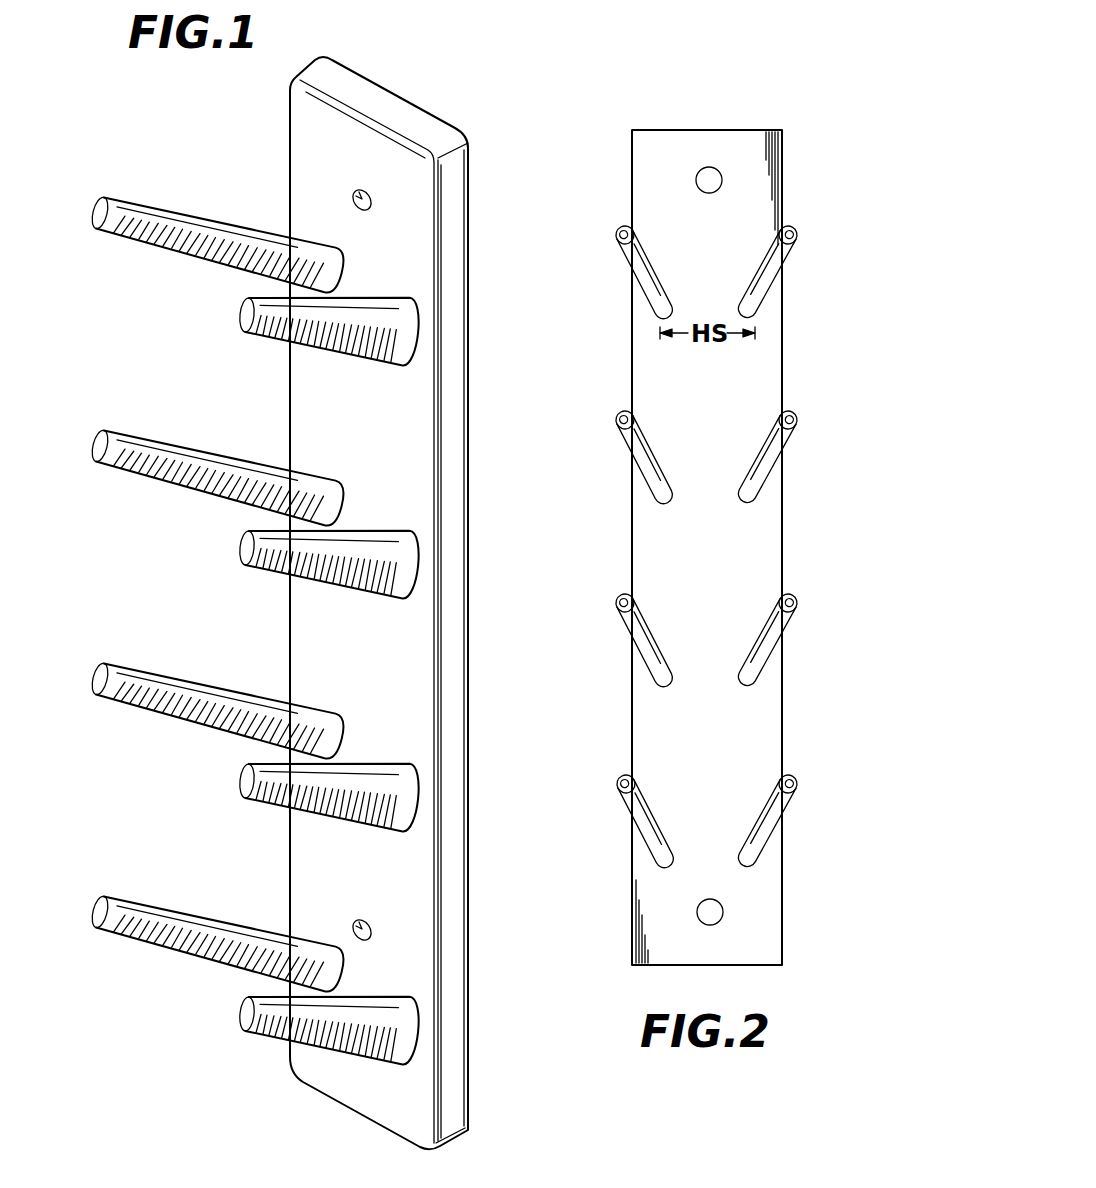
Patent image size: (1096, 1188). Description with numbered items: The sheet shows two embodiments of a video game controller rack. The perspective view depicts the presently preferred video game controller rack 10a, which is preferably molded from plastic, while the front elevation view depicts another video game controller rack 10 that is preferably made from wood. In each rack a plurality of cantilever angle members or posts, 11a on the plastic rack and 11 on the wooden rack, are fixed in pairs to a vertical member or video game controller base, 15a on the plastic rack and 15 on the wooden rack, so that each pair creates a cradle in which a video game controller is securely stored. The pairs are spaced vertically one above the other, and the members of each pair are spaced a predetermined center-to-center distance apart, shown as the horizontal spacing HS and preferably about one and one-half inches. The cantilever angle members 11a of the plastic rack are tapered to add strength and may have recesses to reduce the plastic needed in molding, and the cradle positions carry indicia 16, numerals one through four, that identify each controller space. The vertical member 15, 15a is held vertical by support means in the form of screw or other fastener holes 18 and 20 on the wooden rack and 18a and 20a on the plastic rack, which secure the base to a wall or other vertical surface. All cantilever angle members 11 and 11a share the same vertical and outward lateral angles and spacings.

In FIG. 2, the video game controller rack 10 is at (731, 494).
In FIG. 1, the video game controller rack 10a is at (396, 80).
In FIG. 2, the cantilever angle members 11 is at (616, 243).
In FIG. 1, the cantilever angle members 11a is at (136, 197).
In FIG. 2, the vertical member 15 is at (681, 137).
In FIG. 1, the vertical member 15a is at (452, 266).
In FIG. 1, the indicia 16 is at (362, 712).
In FIG. 2, the fastener hole 18 is at (707, 194).
In FIG. 1, the fastener hole 18a is at (358, 191).
In FIG. 2, the fastener hole 20 is at (709, 898).
In FIG. 1, the fastener hole 20a is at (360, 919).